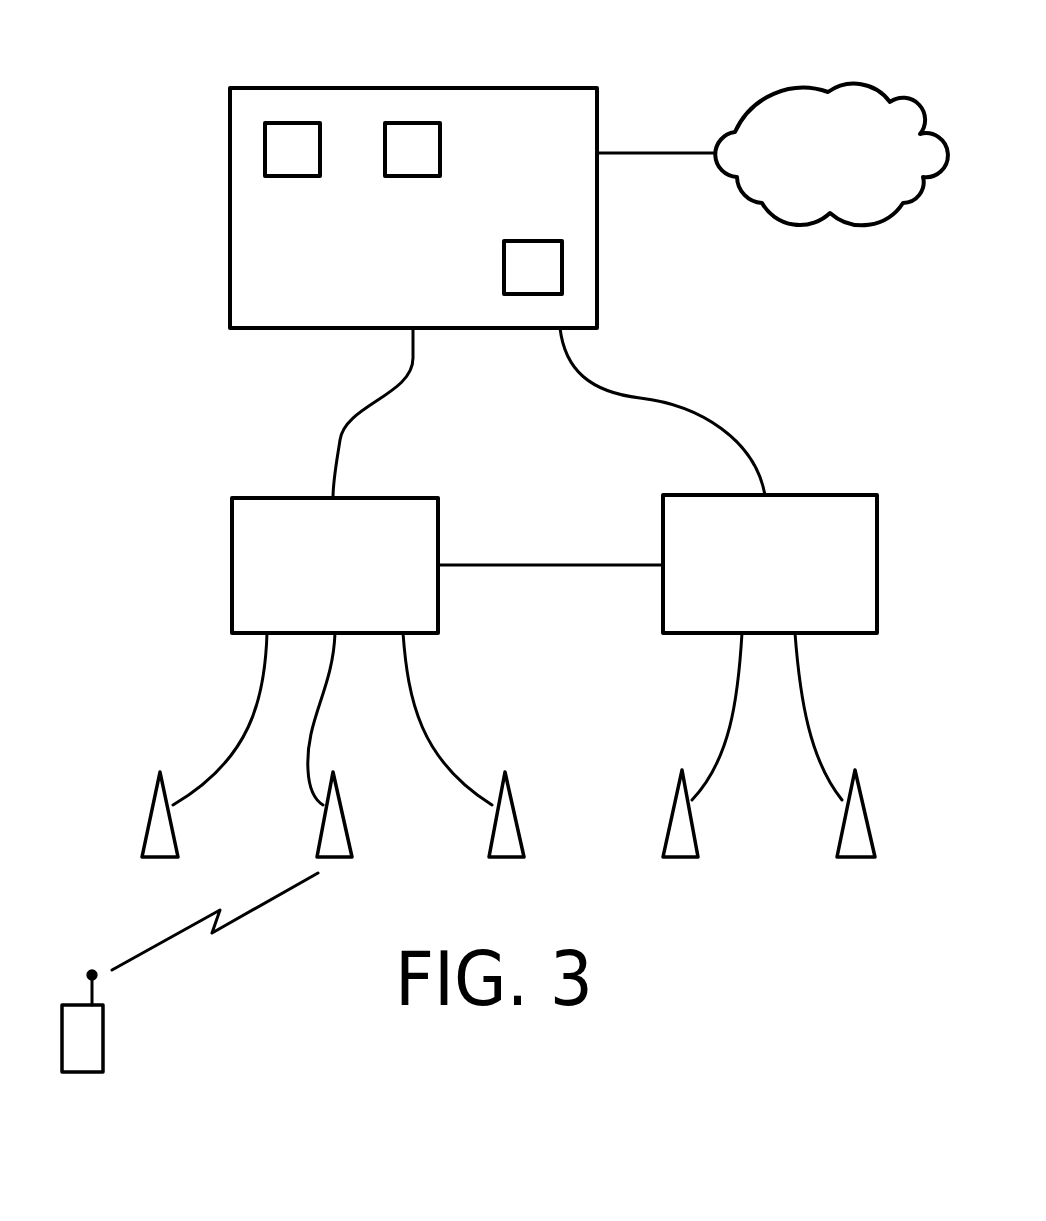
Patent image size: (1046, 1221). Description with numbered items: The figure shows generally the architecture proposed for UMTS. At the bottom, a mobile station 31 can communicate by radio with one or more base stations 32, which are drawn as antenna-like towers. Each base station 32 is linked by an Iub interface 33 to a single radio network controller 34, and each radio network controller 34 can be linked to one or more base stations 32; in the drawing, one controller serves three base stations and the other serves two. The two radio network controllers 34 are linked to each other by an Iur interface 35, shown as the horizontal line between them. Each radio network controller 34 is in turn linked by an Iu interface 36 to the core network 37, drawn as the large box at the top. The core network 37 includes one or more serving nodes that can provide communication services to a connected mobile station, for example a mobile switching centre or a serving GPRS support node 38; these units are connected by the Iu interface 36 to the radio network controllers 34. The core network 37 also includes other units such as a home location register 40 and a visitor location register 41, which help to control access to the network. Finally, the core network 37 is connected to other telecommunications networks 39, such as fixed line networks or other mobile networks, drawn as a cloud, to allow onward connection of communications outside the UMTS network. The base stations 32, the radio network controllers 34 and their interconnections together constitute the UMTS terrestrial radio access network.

The mobile station 31 is at (103, 1045).
The base station 32 is at (147, 832).
The Iub interface 33 is at (255, 712).
The radio network controller 34 is at (314, 585).
The Iur interface 35 is at (545, 565).
The Iu interface 36 is at (340, 440).
The core network 37 is at (230, 312).
The serving GPRS support node 38 is at (562, 283).
The other telecommunications networks 39 is at (810, 171).
The home location register 40 is at (296, 123).
The visitor location register 41 is at (418, 123).